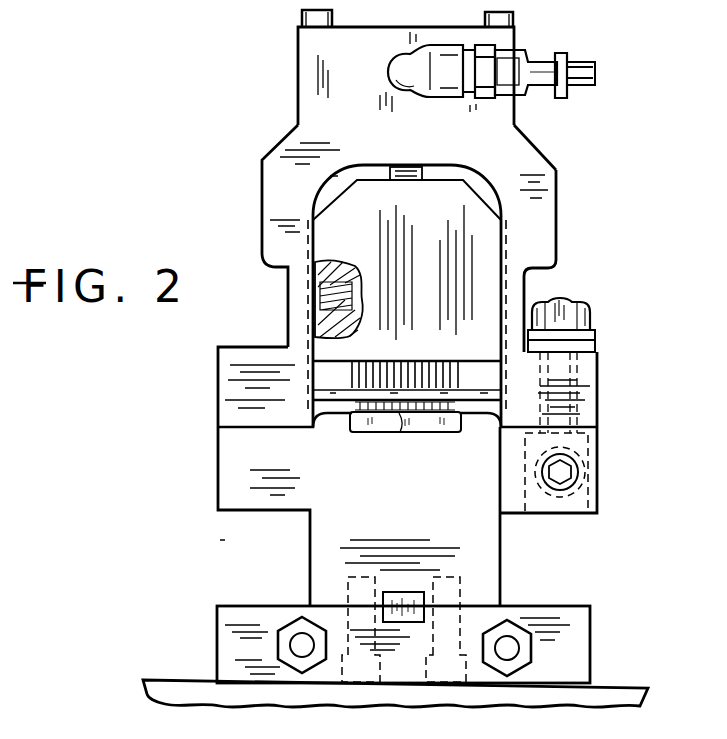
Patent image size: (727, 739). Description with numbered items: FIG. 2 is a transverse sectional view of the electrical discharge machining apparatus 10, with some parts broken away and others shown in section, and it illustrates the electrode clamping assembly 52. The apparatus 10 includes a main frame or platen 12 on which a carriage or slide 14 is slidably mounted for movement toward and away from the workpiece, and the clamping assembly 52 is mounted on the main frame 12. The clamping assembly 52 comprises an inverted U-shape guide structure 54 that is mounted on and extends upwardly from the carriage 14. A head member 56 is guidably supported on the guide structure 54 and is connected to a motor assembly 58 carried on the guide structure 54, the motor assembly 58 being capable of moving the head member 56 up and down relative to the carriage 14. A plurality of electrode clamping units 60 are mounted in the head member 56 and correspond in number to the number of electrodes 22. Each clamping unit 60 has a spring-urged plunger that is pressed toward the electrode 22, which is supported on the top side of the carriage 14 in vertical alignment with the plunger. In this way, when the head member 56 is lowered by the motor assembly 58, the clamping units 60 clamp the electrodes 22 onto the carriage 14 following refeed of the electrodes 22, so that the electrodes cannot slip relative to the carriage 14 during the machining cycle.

The electrical discharge machining apparatus 10 is at (577, 257).
The main frame or platen 12 is at (607, 690).
The carriage or slide 14 is at (467, 527).
The electrodes 22 is at (407, 432).
The electrode clamping assembly 52 is at (543, 153).
The inverted U-shape guide structure 54 is at (268, 197).
The head member 56 is at (440, 223).
The motor assembly 58 is at (372, 68).
The electrode clamping units 60 is at (408, 372).